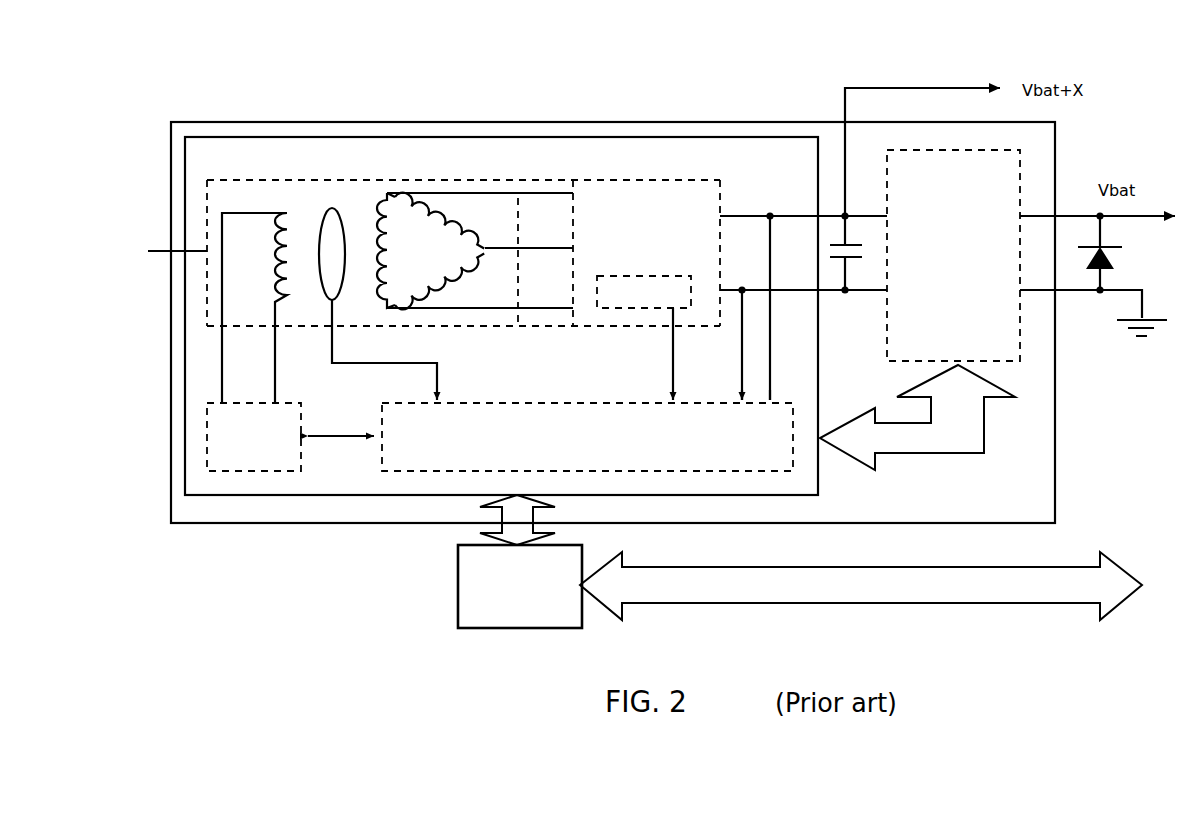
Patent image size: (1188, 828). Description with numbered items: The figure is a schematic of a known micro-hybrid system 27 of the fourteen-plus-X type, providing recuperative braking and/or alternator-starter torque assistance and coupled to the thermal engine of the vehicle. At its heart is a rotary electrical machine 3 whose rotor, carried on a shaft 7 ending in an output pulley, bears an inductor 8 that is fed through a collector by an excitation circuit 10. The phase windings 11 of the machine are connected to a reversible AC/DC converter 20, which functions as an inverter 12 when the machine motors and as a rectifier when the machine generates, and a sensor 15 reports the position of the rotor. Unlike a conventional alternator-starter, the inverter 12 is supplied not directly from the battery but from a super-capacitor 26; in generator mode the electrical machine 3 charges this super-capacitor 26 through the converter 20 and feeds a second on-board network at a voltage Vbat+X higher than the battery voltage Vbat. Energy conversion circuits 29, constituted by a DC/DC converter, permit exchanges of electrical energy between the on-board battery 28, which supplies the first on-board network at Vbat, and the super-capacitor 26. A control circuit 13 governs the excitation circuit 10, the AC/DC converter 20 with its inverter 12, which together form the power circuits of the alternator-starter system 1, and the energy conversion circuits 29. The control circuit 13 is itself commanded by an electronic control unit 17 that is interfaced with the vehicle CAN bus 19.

The alternator-starter system 1 is at (637, 132).
The rotary electrical machine 3 is at (441, 255).
The shaft 7 is at (163, 245).
The inductor 8 is at (290, 212).
The excitation circuit 10 is at (271, 463).
The phase windings 11 is at (448, 197).
The inverter 12 is at (606, 311).
The control circuit 13 is at (713, 447).
The rotor position sensor 15 is at (341, 210).
The electronic control unit 17 is at (457, 588).
The CAN bus 19 is at (976, 565).
The reversible AC/DC converter 20 is at (634, 182).
The super-capacitor 26 is at (830, 252).
The micro-hybrid system 27 is at (621, 117).
The on-board battery 28 is at (1116, 251).
The energy conversion circuits 29 is at (1017, 328).